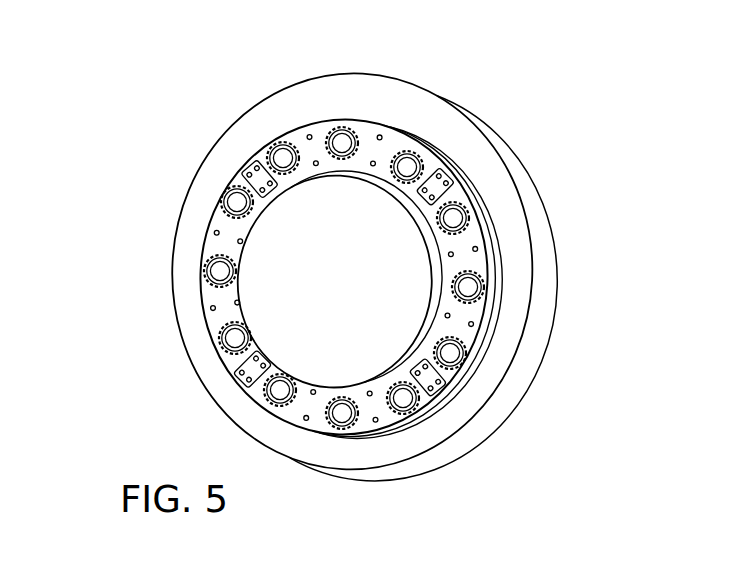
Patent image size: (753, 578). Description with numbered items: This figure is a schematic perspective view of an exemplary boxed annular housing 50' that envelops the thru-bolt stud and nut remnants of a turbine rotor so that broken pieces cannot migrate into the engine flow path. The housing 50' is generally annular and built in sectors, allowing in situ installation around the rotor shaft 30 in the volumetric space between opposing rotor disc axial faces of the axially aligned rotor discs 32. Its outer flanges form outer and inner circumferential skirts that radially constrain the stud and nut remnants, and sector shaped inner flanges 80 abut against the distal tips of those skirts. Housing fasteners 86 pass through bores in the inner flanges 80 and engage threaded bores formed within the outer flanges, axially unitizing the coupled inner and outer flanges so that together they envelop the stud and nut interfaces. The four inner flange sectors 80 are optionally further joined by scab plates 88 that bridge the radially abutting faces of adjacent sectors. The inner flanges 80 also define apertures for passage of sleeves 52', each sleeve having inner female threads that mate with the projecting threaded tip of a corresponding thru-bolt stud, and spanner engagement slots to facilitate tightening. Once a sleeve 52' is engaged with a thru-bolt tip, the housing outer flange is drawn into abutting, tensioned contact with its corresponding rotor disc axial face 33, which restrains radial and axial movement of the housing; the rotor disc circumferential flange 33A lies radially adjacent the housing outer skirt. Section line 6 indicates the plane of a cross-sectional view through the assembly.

The section line 6- 6 is at (556, 188).
The rotor shaft 30 is at (433, 313).
The rotor disc 32 is at (533, 364).
The rotor disc axial face 33 is at (478, 386).
The rotor disc circumferential flange 33A is at (440, 128).
The boxed annular housing 50' is at (331, 291).
The sleeve 52' is at (343, 289).
The sector shaped inner flange 80 is at (322, 150).
The housing fastener 86 is at (212, 230).
The scab plate 88 is at (259, 190).